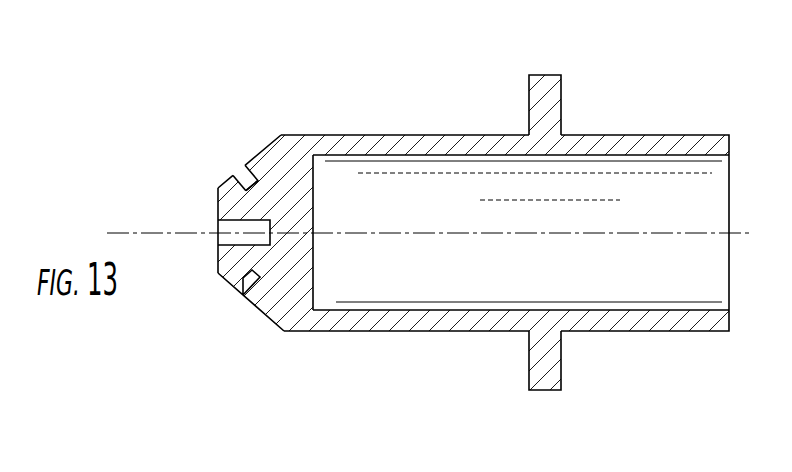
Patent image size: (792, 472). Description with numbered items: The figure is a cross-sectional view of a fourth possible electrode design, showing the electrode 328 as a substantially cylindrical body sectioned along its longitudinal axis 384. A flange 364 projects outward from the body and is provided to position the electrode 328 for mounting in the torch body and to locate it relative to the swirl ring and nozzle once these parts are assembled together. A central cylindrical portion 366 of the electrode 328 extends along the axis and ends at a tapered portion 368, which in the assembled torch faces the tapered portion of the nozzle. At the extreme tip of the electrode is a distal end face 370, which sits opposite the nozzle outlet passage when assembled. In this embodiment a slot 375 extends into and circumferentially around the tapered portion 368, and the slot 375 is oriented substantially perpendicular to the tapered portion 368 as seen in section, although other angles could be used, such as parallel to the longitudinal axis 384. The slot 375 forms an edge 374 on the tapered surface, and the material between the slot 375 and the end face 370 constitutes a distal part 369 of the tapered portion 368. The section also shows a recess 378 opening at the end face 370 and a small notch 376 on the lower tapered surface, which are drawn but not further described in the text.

The electrode 328 is at (383, 53).
The flange 364 is at (547, 75).
The central cylindrical portion 366 is at (447, 135).
The tapered portion 368 is at (280, 136).
The distal part of tapered portion 369 is at (243, 181).
The end face 370 is at (218, 212).
The edge 374 is at (250, 185).
The slot 375 is at (248, 183).
The notch 376 is at (219, 258).
The bore recess 378 is at (218, 238).
The longitudinal axis 384 is at (455, 233).